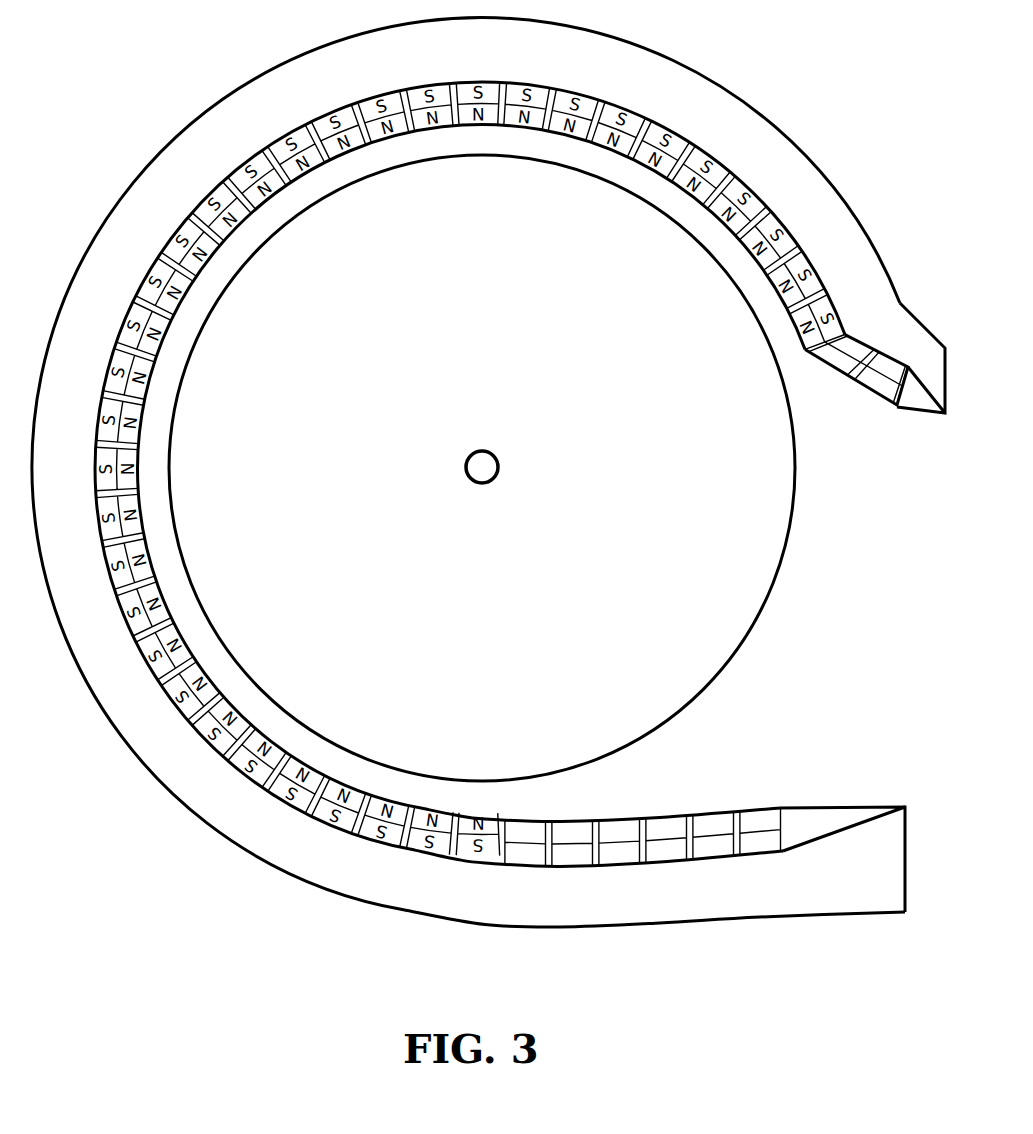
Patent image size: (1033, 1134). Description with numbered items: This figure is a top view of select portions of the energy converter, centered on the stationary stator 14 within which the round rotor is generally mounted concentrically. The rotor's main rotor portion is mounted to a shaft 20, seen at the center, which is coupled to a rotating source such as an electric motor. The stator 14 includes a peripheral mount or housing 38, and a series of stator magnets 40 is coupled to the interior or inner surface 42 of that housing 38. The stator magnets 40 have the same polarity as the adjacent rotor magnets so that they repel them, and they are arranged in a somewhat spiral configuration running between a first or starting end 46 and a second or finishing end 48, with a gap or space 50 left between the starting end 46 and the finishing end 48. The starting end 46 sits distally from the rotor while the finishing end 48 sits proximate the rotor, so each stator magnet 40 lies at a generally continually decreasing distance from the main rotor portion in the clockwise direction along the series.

The stator 14 is at (679, 93).
The shaft 20 is at (500, 465).
The peripheral housing 38 is at (448, 143).
The stator magnets 40 is at (813, 263).
The inner surface 42 is at (183, 221).
The starting end 46 is at (803, 812).
The finishing end 48 is at (905, 410).
The gap 50 is at (862, 627).